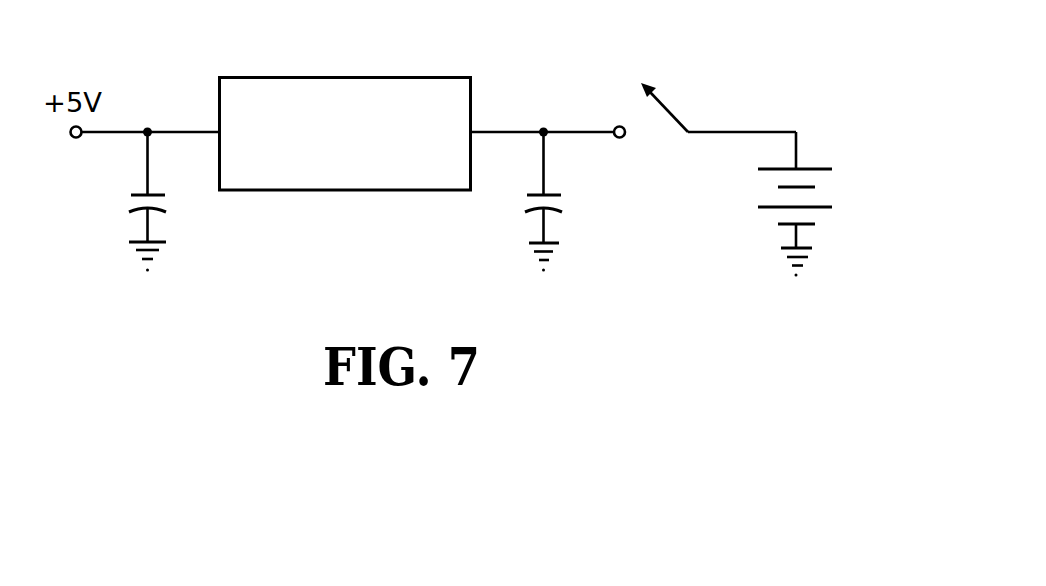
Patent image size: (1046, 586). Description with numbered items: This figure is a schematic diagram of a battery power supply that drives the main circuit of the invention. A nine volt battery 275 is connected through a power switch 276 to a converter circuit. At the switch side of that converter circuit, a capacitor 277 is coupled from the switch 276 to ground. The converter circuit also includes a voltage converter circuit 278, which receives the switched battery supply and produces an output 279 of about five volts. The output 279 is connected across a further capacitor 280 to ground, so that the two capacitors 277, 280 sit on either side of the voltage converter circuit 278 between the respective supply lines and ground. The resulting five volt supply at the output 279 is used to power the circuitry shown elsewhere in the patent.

The 9 volt battery 275 is at (825, 199).
The power switch 276 is at (718, 94).
The capacitor 277 is at (534, 203).
The voltage converter circuit 278 is at (345, 106).
The output 279 is at (151, 96).
The capacitor 280 is at (141, 207).